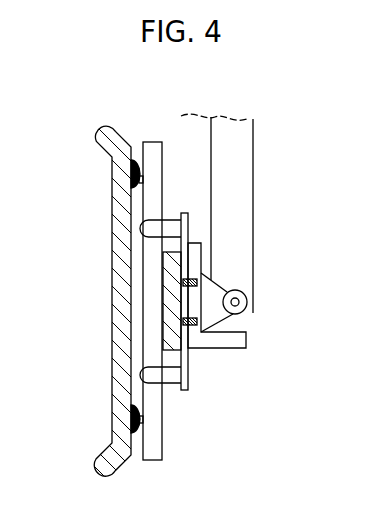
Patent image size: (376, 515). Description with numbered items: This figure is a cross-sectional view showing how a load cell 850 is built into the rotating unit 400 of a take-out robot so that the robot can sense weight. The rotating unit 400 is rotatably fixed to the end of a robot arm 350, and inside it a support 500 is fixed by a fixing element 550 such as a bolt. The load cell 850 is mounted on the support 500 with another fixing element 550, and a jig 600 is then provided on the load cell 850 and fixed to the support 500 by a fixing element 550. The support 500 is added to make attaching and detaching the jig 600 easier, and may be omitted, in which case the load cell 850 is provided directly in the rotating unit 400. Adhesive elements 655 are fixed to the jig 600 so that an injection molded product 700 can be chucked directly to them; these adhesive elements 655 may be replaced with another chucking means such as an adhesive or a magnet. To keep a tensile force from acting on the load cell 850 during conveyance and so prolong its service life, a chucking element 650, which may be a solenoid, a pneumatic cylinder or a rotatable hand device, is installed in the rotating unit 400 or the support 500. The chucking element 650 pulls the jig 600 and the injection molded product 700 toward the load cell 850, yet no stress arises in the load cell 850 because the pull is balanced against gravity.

The robot arm 350 is at (245, 239).
The rotating unit 400 is at (243, 343).
The support 500 is at (188, 357).
The fixing element 550 is at (203, 322).
The jig 600 is at (158, 444).
The chucking element 650 is at (171, 224).
The adhesive element 655 is at (133, 422).
The injection molded product 700 is at (104, 463).
The load cell 850 is at (168, 300).